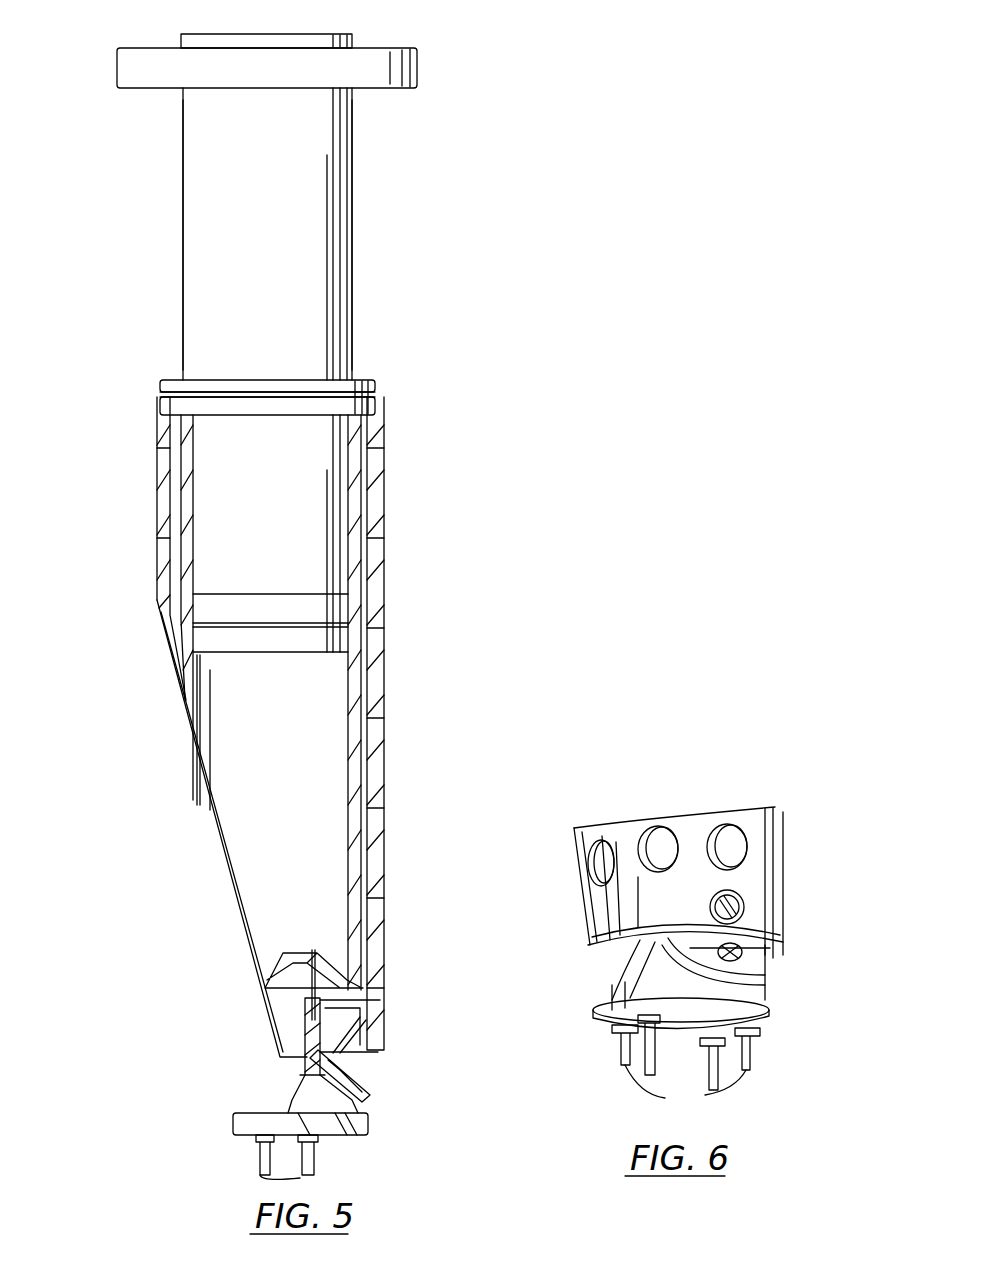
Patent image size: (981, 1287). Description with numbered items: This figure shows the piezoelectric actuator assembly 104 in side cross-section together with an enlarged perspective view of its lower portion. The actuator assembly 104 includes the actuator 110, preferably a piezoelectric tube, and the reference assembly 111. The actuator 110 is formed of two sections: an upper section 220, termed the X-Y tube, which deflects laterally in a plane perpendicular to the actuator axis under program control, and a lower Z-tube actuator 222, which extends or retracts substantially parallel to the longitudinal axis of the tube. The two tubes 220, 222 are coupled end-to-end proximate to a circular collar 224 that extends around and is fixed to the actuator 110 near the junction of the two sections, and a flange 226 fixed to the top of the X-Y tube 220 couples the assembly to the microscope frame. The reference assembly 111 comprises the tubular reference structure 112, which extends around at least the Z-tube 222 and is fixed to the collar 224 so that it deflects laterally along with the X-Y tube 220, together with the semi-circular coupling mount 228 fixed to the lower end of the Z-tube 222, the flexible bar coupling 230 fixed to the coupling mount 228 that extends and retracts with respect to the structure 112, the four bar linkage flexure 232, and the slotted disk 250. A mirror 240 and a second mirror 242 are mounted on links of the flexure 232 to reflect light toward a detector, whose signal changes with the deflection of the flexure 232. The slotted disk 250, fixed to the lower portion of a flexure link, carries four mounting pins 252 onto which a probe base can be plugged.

In FIG. 5, the actuator assembly 104 is at (470, 72).
In FIG. 5, the actuator 110 is at (375, 180).
In FIG. 5, the reference assembly 111 is at (405, 590).
In FIG. 5, the reference structure 112 is at (380, 427).
In FIG. 6, the reference structure 112 is at (778, 832).
In FIG. 5, the upper section 220 is at (352, 290).
In FIG. 5, the Z-tube actuator 222 is at (186, 700).
In FIG. 5, the circular collar 224 is at (375, 385).
In FIG. 5, the flange 226 is at (117, 63).
In FIG. 5, the coupling mount 228 is at (285, 963).
In FIG. 5, the flexible bar coupling 230 is at (305, 1000).
In FIG. 5, the flexure 232 is at (365, 1100).
In FIG. 6, the flexure 232 is at (612, 990).
In FIG. 5, the mirror 240 is at (355, 1022).
In FIG. 6, the mirror 240 is at (745, 908).
In FIG. 5, the mirror 242 is at (368, 1070).
In FIG. 6, the mirror 242 is at (770, 945).
In FIG. 5, the slotted disk 250 is at (370, 1122).
In FIG. 6, the slotted disk 250 is at (775, 1010).
In FIG. 5, the mounting pins 252 is at (300, 1170).
In FIG. 6, the mounting pins 252 is at (700, 1085).